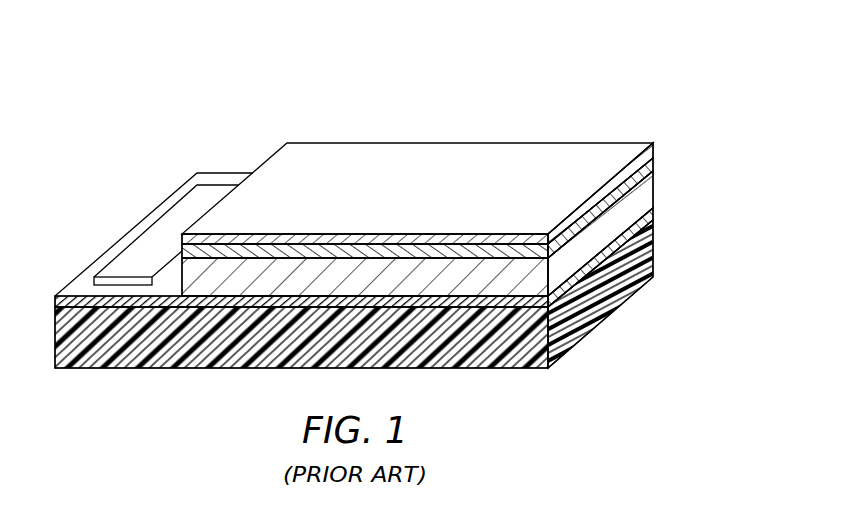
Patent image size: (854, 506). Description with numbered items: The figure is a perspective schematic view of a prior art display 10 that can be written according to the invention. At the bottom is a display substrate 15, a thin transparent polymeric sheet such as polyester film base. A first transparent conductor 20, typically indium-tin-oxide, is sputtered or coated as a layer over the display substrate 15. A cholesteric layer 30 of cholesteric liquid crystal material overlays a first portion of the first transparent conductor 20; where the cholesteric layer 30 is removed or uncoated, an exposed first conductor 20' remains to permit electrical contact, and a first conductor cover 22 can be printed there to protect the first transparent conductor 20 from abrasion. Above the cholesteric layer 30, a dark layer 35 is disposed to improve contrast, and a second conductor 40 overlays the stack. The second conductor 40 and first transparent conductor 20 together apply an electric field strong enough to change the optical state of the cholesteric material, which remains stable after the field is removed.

The display 10 is at (183, 104).
The display substrate 15 is at (653, 254).
The first transparent conductor 20 is at (382, 249).
The exposed first conductor 20' is at (143, 234).
The first conductor cover 22 is at (162, 232).
The cholesteric layer 30 is at (653, 194).
The dark layer 35 is at (653, 162).
The second conductor 40 is at (653, 150).